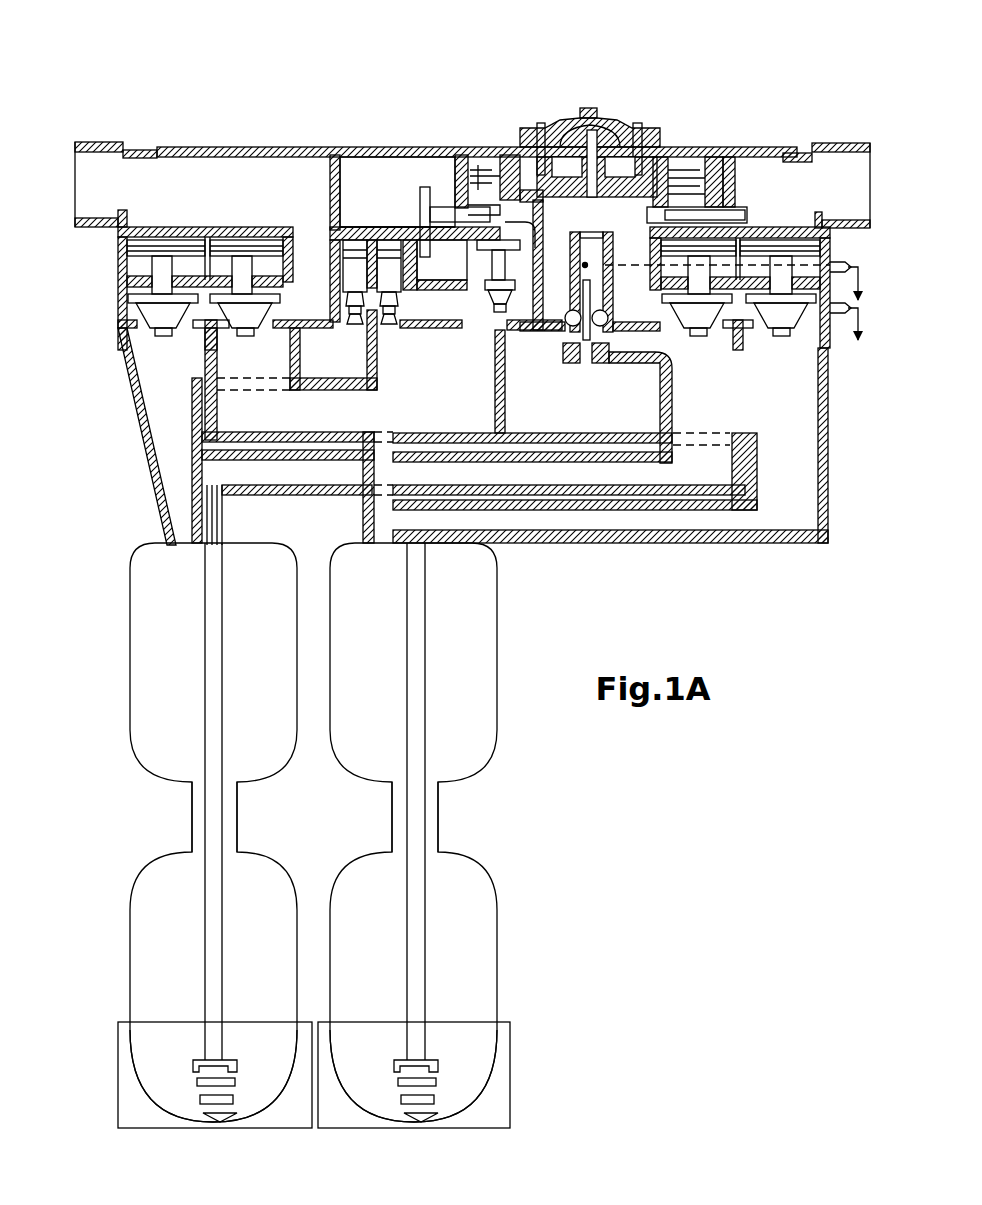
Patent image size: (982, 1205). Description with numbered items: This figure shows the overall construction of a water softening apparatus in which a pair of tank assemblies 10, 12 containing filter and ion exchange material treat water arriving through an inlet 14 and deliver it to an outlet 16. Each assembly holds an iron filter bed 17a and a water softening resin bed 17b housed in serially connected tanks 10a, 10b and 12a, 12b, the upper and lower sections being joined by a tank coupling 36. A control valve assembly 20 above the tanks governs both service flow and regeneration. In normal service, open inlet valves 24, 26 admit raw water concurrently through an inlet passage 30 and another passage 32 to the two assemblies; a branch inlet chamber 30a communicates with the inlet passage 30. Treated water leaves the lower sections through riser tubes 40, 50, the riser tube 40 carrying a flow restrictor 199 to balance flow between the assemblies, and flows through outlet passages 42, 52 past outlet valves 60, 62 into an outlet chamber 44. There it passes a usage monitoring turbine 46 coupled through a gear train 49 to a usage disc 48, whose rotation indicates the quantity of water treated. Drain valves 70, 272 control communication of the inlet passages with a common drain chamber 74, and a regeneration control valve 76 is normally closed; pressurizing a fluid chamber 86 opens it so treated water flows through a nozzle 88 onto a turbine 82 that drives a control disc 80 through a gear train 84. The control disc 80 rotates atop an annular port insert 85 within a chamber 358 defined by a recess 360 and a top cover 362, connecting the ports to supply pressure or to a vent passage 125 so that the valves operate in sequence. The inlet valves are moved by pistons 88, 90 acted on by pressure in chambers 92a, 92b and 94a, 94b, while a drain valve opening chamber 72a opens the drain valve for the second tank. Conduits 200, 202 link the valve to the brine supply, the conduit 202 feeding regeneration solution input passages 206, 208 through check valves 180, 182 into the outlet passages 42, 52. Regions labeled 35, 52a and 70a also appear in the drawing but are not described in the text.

The tank assembly 10 is at (116, 665).
The upper tank section 10a is at (165, 728).
The lower tank section 10b is at (145, 948).
The tank assembly 12 is at (560, 808).
The upper tank section 12a is at (465, 720).
The lower tank section 12b is at (475, 915).
The inlet 14 is at (88, 175).
The outlet 16 is at (851, 178).
The iron filter bed 17a is at (185, 656).
The water softening resin bed 17b is at (279, 956).
The control valve assembly 20 is at (298, 118).
The inlet valve 24 is at (157, 322).
The inlet valve 26 is at (247, 322).
The inlet passage 30 is at (150, 445).
The branch inlet chamber 30a is at (345, 380).
The passage 32 is at (215, 412).
The lower chamber liquid 35 is at (182, 914).
The tank coupling 36 is at (192, 825).
The riser tube 40 is at (222, 825).
The outlet passage 42 is at (555, 535).
The outlet chamber 44 is at (660, 165).
The usage monitoring turbine 46 is at (738, 216).
The usage disc 48 is at (600, 120).
The gear train 49 is at (720, 160).
The riser tube 50 is at (425, 825).
The outlet passage 52 is at (652, 530).
The manifold chamber 52a is at (555, 421).
The outlet valve 60 is at (706, 334).
The outlet valve 62 is at (781, 337).
The drain valve 70 is at (350, 327).
The solenoid valve chamber 70a is at (418, 228).
The drain valve opening chamber 72a is at (420, 215).
The drain chamber 74 is at (445, 320).
The regeneration control valve 76 is at (500, 308).
The control disc 80 is at (540, 128).
The turbine 82 is at (425, 190).
The gear train 84 is at (462, 225).
The annular insert 85 is at (636, 130).
The fluid chamber 86 is at (518, 243).
The nozzle 88 is at (127, 250).
The piston 90 is at (185, 242).
The chamber 92a is at (145, 240).
The chamber 92b is at (127, 272).
The valve closure chamber 94a is at (243, 242).
The chamber 94b is at (283, 262).
The vent passage 125 is at (410, 228).
The check valve 180 is at (585, 332).
The check valve 182 is at (604, 326).
The flow restrictor 199 is at (212, 545).
The conduit 200 is at (860, 340).
The conduit 202 is at (858, 267).
The regeneration solution input passage 206 is at (576, 312).
The regeneration solution input passage 208 is at (608, 312).
The drain valve 272 is at (388, 325).
The chamber 358 is at (556, 128).
The recess 360 is at (530, 135).
The top cover 362 is at (605, 125).